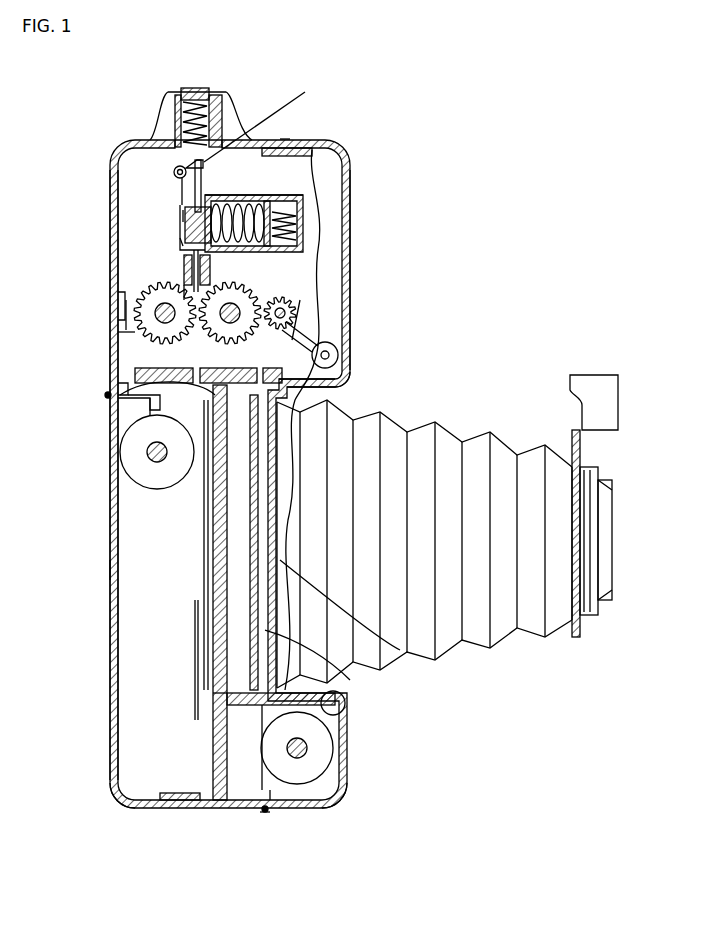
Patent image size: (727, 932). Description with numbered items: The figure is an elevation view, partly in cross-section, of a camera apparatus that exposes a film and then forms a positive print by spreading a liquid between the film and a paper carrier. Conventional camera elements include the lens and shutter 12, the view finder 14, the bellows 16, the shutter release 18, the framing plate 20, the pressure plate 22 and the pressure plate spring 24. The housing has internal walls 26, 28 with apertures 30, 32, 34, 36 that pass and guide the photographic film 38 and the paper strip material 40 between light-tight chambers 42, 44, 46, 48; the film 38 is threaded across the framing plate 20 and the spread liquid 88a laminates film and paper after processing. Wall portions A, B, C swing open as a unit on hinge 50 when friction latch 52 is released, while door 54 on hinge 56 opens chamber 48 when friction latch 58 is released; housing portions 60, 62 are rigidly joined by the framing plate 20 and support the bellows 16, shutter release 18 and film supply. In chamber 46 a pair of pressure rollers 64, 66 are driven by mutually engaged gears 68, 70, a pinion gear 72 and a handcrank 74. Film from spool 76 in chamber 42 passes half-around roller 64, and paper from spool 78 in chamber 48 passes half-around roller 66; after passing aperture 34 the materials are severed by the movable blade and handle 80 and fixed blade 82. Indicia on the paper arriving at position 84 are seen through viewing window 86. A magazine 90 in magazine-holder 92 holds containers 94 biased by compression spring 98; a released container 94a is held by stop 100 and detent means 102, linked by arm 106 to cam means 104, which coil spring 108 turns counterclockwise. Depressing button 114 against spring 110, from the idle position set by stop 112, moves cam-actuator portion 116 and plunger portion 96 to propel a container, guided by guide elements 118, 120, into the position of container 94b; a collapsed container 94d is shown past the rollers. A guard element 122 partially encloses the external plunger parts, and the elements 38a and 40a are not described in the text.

The lens and shutter 12 is at (608, 540).
The view finder 14 is at (610, 406).
The bellows 16 is at (508, 632).
The shutter release 18 is at (345, 703).
The framing plate 20 is at (300, 392).
The pressure plate 22 is at (350, 680).
The pressure plate spring 24 is at (213, 620).
The internal wall 26 is at (222, 700).
The internal wall 28 is at (118, 408).
The aperture 30 is at (258, 706).
The aperture 32 is at (348, 379).
The aperture 34 is at (213, 370).
The aperture 36 is at (120, 370).
The photographic film 38 is at (262, 735).
The guide rail 38a is at (208, 598).
The paper strip material 40 is at (138, 365).
The guide rail 40a is at (204, 540).
The chamber 42 is at (270, 792).
The chamber 44 is at (400, 650).
The chamber 46 is at (344, 153).
The chamber 48 is at (125, 760).
The hinge 50 is at (264, 812).
The friction latch 52 is at (268, 160).
The door 54 is at (112, 675).
The hinge 56 is at (104, 395).
The friction latch 58 is at (175, 795).
The housing portion 60 is at (342, 780).
The housing portion 62 is at (351, 289).
The pressure roller 64 is at (300, 345).
The pressure roller 66 is at (135, 332).
The gear 68 is at (245, 292).
The gear 70 is at (140, 296).
The pinion gear 72 is at (288, 300).
The handcrank 74 is at (338, 352).
The spool 76 is at (325, 748).
The spool 78 is at (150, 485).
The movable blade and handle 80 is at (150, 405).
The fixed blade 82 is at (150, 430).
The position 84 is at (120, 314).
The viewing window 86 is at (118, 302).
The viscous liquid 88a is at (210, 572).
The magazine 90 is at (320, 266).
The magazine-holder 92 is at (303, 203).
The containers 94 is at (246, 197).
The container 94a is at (183, 220).
The container 94b is at (184, 290).
The container 94d is at (194, 658).
The plunger portion 96 is at (181, 200).
The compression spring 98 is at (300, 229).
The stop 100 is at (180, 215).
The detent means 102 is at (182, 242).
The cam means 104 is at (201, 183).
The arm 106 is at (196, 232).
The coil spring 108 is at (173, 170).
The spring 110 is at (183, 120).
The stop 112 is at (204, 164).
The button 114 is at (192, 92).
The cam-actuator portion 116 is at (269, 118).
The guide element 118 is at (186, 260).
The guide element 120 is at (208, 270).
The guard element 122 is at (240, 110).
The external wall portion A is at (265, 818).
The external wall portion B is at (106, 570).
The external wall portion C is at (285, 136).